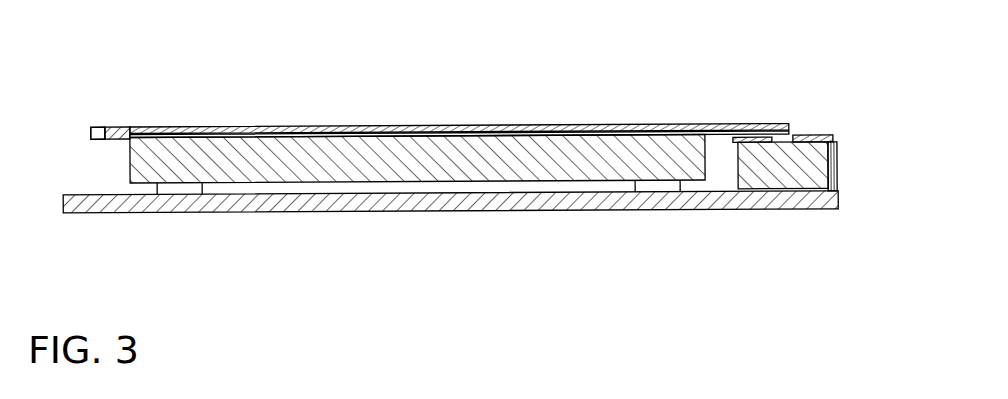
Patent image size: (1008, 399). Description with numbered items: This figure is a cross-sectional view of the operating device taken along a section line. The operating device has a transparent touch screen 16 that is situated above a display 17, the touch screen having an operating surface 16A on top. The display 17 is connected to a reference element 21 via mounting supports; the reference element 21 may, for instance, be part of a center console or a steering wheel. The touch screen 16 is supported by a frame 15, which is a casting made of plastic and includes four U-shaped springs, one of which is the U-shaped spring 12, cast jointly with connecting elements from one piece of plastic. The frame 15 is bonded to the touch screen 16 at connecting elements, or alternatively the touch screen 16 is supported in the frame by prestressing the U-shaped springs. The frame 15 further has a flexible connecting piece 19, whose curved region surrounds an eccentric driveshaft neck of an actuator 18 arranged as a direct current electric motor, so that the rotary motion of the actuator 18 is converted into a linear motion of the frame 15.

The U-shaped spring 12 is at (97, 133).
The frame 15 is at (122, 133).
The transparent touch screen 16 is at (346, 128).
The operating surface 16A is at (417, 128).
The display 17 is at (203, 163).
The actuator 18 is at (808, 161).
The connecting piece 19 is at (743, 140).
The reference element 21 is at (227, 202).